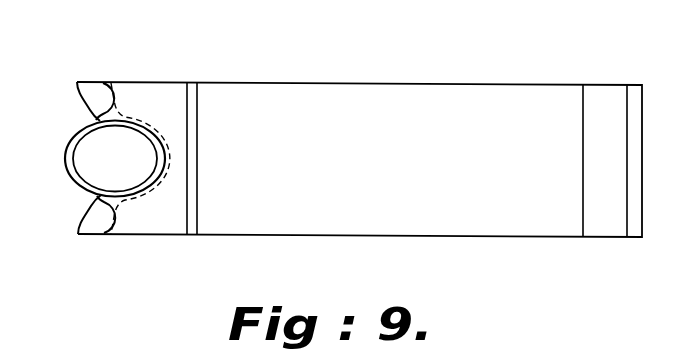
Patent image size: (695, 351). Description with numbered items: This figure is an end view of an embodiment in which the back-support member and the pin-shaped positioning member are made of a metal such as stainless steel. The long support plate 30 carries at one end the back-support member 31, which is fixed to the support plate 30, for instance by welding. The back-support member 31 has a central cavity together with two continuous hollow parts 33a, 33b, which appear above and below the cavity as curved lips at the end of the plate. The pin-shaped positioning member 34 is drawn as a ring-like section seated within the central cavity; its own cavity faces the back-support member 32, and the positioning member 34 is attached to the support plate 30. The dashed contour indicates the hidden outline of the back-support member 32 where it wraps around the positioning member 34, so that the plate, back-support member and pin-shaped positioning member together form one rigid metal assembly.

The support plate 30 is at (413, 98).
The back-support member 31 is at (150, 88).
The back-support member 32 is at (168, 158).
The continuous hollow part 33a is at (98, 100).
The continuous hollow part 33b is at (103, 228).
The pin-shaped positioning member 34 is at (71, 177).